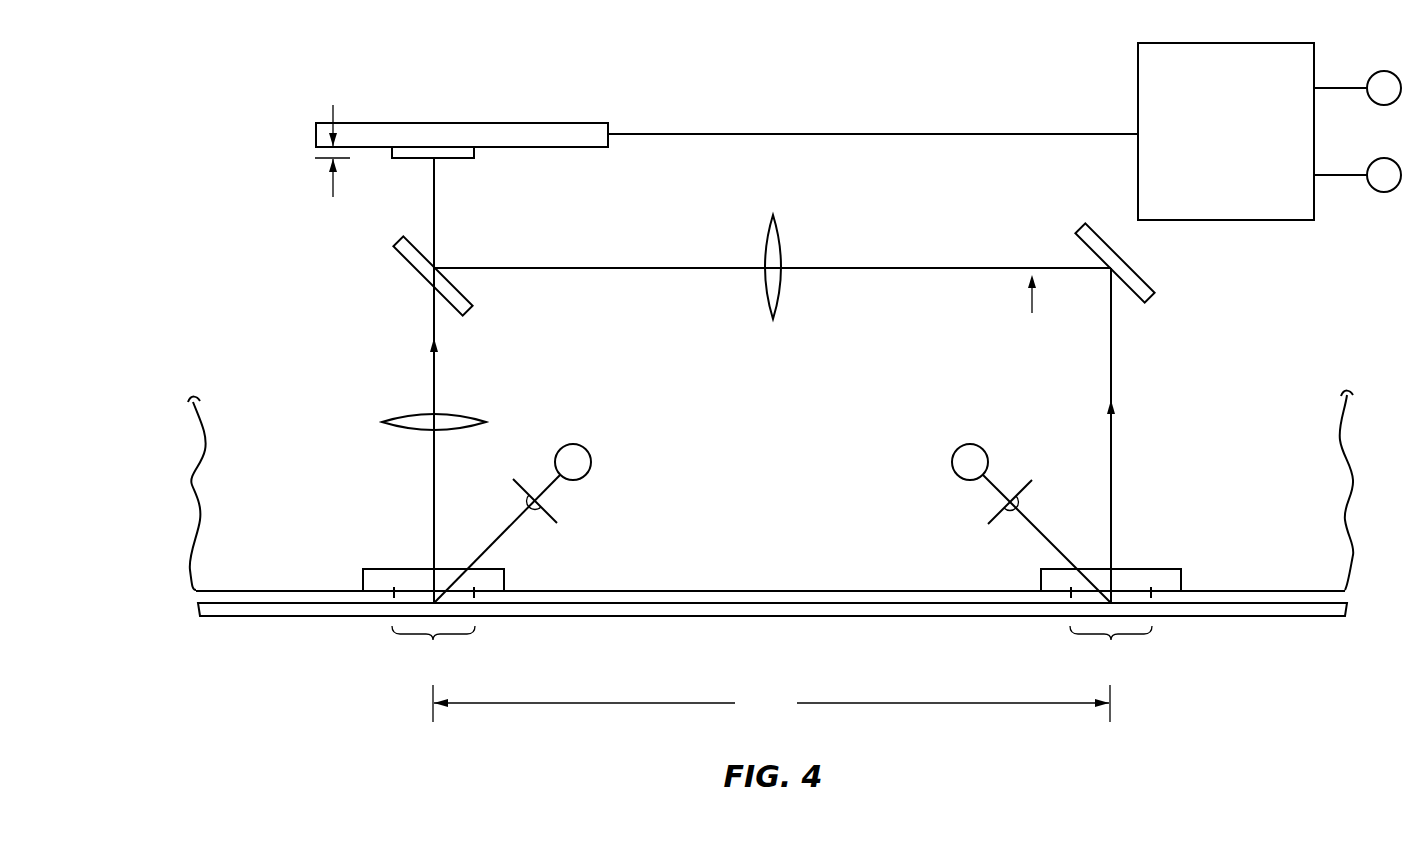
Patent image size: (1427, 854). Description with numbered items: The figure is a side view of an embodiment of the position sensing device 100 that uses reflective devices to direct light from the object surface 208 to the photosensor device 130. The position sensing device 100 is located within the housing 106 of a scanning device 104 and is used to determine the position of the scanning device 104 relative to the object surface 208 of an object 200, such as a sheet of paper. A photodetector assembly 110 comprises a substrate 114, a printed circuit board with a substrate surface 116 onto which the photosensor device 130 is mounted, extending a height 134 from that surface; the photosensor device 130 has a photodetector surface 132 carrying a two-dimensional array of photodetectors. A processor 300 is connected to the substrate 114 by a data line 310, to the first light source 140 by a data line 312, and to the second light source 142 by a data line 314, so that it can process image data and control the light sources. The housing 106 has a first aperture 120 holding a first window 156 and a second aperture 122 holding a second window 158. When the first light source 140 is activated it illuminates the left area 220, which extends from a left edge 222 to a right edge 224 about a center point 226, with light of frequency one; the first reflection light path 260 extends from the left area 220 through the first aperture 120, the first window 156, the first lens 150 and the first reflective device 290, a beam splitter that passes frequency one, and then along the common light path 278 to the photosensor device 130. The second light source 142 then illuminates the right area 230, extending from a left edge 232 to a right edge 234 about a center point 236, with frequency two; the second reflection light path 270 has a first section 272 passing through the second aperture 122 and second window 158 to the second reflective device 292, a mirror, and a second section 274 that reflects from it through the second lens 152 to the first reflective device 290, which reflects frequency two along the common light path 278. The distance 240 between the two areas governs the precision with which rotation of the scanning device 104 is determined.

The position sensing device 100 is at (850, 45).
The scanning device 104 is at (150, 552).
The housing 106 is at (180, 484).
The photodetector assembly 110 is at (495, 91).
The substrate 114 is at (316, 133).
The substrate surface 116 is at (568, 147).
The first aperture 120 is at (456, 530).
The second aperture 122 is at (1088, 528).
The photosensor device 130 is at (392, 150).
The photodetector surface 132 is at (455, 160).
The height 134 is at (333, 188).
The first light source 140 is at (515, 480).
The second light source 142 is at (1028, 480).
The first lens 150 is at (396, 412).
The second lens 152 is at (762, 290).
The first window 156 is at (491, 568).
The second window 158 is at (1054, 569).
The object 200 is at (1288, 623).
The object surface 208 is at (815, 591).
The left area 220 is at (433, 649).
The left edge 222 is at (394, 598).
The right edge 224 is at (474, 598).
The center point 226 is at (434, 603).
The right area 230 is at (1111, 649).
The left edge 232 is at (1071, 598).
The right edge 234 is at (1151, 598).
The center point 236 is at (1111, 603).
The distance 240 is at (771, 703).
The first reflection light path 260 is at (434, 318).
The second reflection light path 270 is at (1088, 333).
The first section 272 is at (1111, 355).
The second section 274 is at (950, 266).
The common light path 278 is at (434, 228).
The first reflective device 290 is at (408, 269).
The second reflective device 292 is at (1142, 273).
The processor 300 is at (1226, 131).
The data line 310 is at (1000, 133).
The data line 312 is at (1342, 87).
The data line 314 is at (1342, 177).